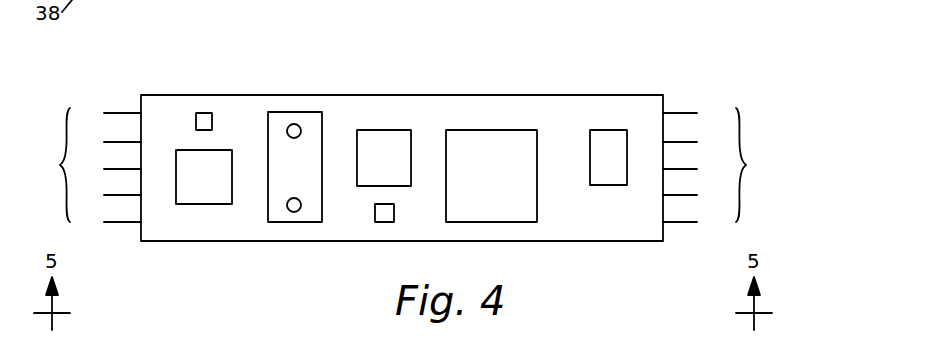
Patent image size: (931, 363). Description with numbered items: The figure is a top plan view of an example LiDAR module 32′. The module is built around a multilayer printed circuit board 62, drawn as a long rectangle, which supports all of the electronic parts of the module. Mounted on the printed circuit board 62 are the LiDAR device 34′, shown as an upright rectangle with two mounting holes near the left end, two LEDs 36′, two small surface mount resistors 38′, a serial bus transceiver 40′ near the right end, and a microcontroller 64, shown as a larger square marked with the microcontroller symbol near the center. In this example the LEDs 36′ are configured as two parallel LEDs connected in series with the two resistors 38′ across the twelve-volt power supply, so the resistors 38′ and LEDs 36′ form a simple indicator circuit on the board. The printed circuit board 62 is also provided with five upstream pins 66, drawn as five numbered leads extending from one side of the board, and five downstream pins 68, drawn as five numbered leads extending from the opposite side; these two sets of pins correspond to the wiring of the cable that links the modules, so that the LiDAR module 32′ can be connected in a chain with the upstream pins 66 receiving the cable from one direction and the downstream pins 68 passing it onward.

The LiDAR module 32′ is at (550, 72).
The multilayer printed circuit board 62 is at (572, 220).
The surface mount resistors 38′ is at (205, 112).
The LEDs 36′ is at (198, 183).
The LiDAR device 34′ is at (310, 140).
The microcontroller 64 is at (472, 143).
The RS-485 transceiver 40′ is at (605, 145).
The downstream pins 68 is at (86, 167).
The upstream pins 66 is at (722, 167).